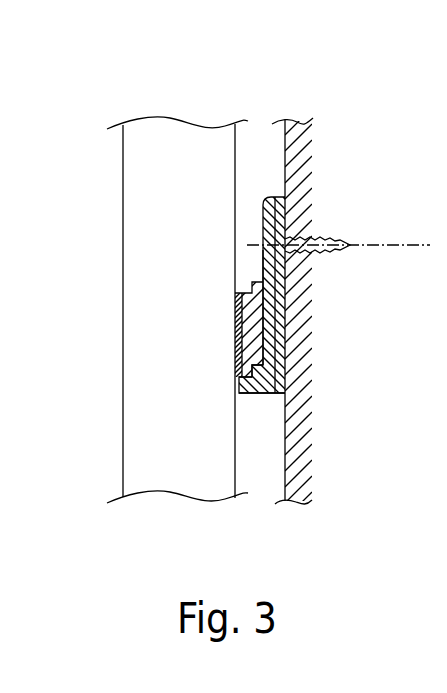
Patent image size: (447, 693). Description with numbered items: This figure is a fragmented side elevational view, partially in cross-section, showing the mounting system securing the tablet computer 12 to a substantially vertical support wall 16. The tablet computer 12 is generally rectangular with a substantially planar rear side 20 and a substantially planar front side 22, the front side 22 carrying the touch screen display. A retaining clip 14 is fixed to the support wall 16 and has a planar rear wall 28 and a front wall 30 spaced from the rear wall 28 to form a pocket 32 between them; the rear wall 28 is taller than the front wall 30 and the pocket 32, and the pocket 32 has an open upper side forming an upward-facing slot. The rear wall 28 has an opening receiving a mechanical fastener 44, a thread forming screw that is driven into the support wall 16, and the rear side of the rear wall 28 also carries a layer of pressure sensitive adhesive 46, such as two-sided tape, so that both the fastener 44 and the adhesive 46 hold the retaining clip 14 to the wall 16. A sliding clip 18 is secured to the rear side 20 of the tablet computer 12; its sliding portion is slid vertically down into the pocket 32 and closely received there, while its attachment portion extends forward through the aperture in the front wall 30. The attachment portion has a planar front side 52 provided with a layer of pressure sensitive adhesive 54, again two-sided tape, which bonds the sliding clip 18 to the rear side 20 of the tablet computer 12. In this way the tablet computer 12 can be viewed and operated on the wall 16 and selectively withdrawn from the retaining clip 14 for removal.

The tablet computer 12 is at (147, 262).
The retaining clip 14 is at (245, 293).
The support wall 16 is at (284, 134).
The sliding clip 18 is at (214, 344).
The rear side 20 is at (236, 168).
The front side 22 is at (122, 357).
The rear wall 28 is at (283, 322).
The front wall 30 is at (215, 415).
The pocket 32 is at (262, 340).
The mechanical fastener 44 is at (330, 238).
The pressure sensitive adhesive 46 is at (280, 378).
The front side 52 is at (234, 308).
The pressure sensitive adhesive 54 is at (254, 368).